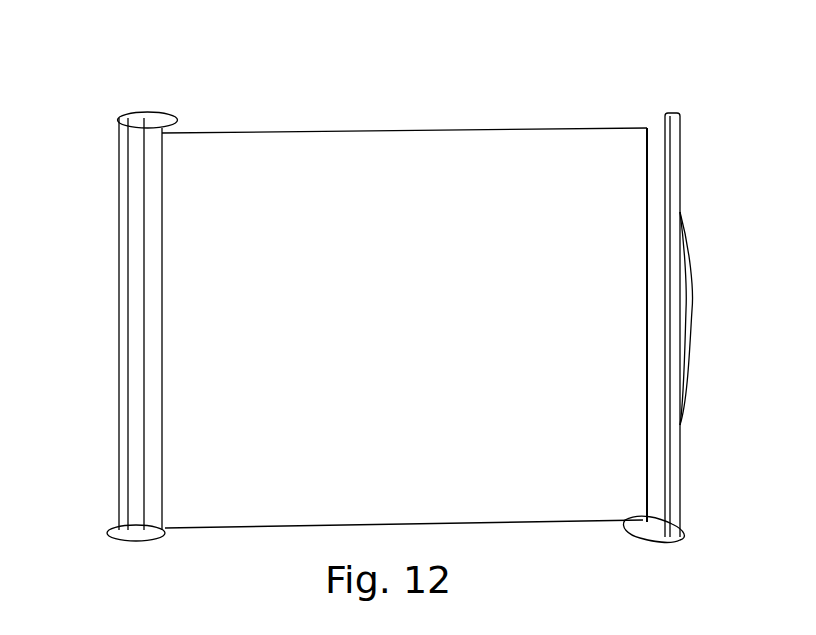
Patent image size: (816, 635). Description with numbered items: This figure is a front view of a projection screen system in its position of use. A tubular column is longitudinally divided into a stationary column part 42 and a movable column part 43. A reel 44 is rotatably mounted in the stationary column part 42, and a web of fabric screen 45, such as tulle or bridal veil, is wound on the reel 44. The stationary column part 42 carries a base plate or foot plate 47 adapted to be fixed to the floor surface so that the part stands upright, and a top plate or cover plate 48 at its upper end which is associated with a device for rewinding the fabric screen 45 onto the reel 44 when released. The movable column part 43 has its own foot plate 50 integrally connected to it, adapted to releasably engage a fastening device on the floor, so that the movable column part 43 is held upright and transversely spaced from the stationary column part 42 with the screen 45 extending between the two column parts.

The stationary column part 42 is at (124, 233).
The movable column part 43 is at (680, 112).
The reel 44 is at (153, 190).
The fabric screen 45 is at (410, 153).
The base plate or foot plate 47 is at (108, 540).
The top plate or cover plate 48 is at (160, 117).
The base plate or foot plate 50 is at (672, 542).